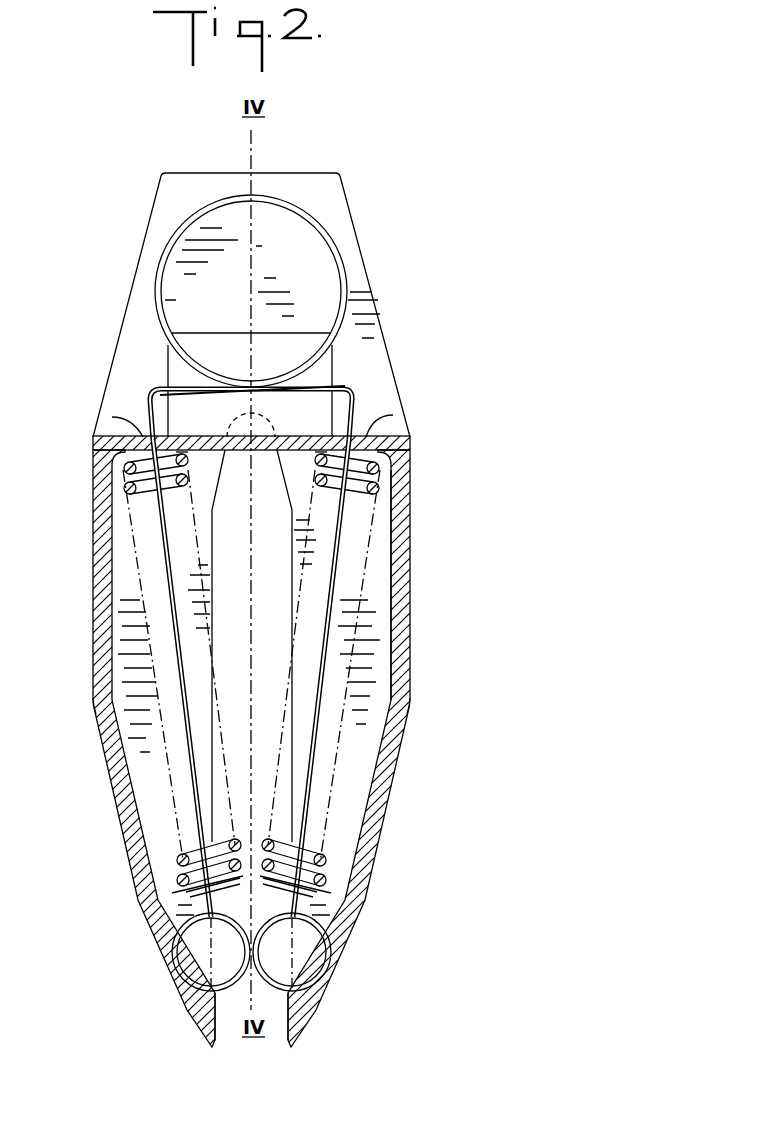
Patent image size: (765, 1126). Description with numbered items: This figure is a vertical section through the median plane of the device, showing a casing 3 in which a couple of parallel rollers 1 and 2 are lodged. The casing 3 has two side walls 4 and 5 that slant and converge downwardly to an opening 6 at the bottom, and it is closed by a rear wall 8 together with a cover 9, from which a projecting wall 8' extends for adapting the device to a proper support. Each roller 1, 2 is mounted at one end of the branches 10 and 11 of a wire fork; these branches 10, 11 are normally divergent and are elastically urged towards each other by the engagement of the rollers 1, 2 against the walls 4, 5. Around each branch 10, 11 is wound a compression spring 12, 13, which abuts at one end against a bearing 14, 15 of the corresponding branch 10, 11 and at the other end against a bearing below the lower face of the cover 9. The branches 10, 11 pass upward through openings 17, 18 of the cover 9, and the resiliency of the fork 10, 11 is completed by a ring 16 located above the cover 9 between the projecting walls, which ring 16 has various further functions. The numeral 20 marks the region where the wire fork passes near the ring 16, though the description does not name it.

The roller 1 is at (197, 963).
The roller 2 is at (312, 968).
The casing 3 is at (88, 528).
The side wall 4 is at (95, 722).
The side wall 5 is at (397, 730).
The opening 6 is at (230, 1036).
The rear wall 8 is at (420, 585).
The projecting wall 8' is at (251, 305).
The cover 9 is at (203, 437).
The fork branch 10 is at (198, 797).
The fork branch 11 is at (313, 768).
The compression spring 12 is at (190, 850).
The compression spring 13 is at (305, 848).
The bearing 14 is at (172, 892).
The bearing 15 is at (325, 892).
The ring 16 is at (346, 278).
The opening 17 is at (112, 417).
The opening 18 is at (393, 415).
The wire crossing 20 is at (176, 392).